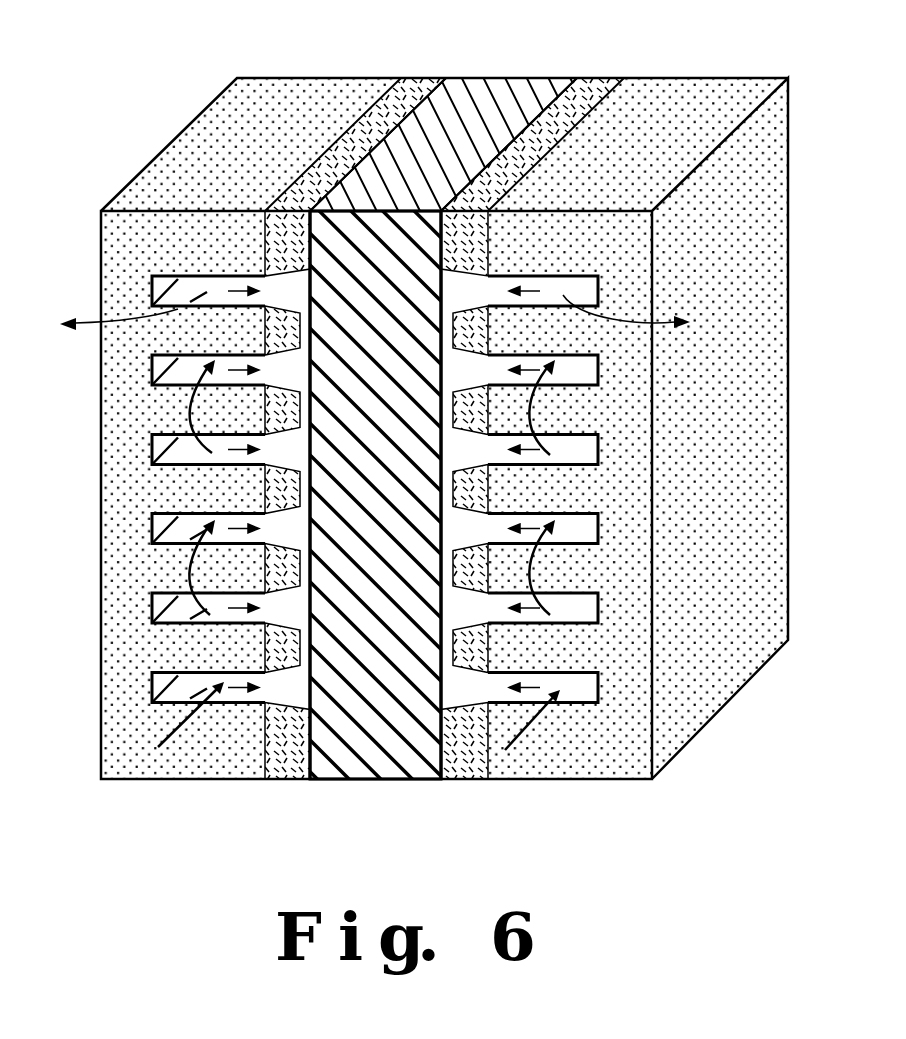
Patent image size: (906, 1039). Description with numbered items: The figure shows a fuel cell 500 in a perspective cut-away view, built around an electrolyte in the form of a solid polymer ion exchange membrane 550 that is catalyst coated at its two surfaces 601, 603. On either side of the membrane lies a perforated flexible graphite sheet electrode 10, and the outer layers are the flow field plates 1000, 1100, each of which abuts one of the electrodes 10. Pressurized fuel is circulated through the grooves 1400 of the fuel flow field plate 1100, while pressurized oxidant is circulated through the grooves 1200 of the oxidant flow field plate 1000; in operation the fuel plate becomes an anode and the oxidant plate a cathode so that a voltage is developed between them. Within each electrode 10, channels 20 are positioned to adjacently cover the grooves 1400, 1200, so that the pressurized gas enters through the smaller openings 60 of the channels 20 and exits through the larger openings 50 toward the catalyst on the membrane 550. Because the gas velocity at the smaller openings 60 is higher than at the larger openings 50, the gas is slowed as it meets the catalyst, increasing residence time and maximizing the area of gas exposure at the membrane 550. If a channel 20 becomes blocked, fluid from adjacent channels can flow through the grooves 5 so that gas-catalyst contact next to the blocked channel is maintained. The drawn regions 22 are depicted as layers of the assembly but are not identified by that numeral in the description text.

The grooves 5 is at (307, 567).
The perforated flexible graphite sheet electrode 10 is at (275, 783).
The channels 20 is at (285, 500).
The electrode 22 is at (368, 113).
The larger openings 50 is at (345, 135).
The smaller openings 60 is at (200, 768).
The fuel cell 500 is at (607, 58).
The solid polymer ion exchange membrane 550 is at (518, 77).
The catalyst coated surface 601 is at (308, 762).
The catalyst coated surface 603 is at (442, 772).
The oxidant flow field plate 1000 is at (765, 248).
The fuel flow field plate 1100 is at (188, 126).
The grooves 1200 is at (588, 608).
The grooves 1400 is at (283, 513).